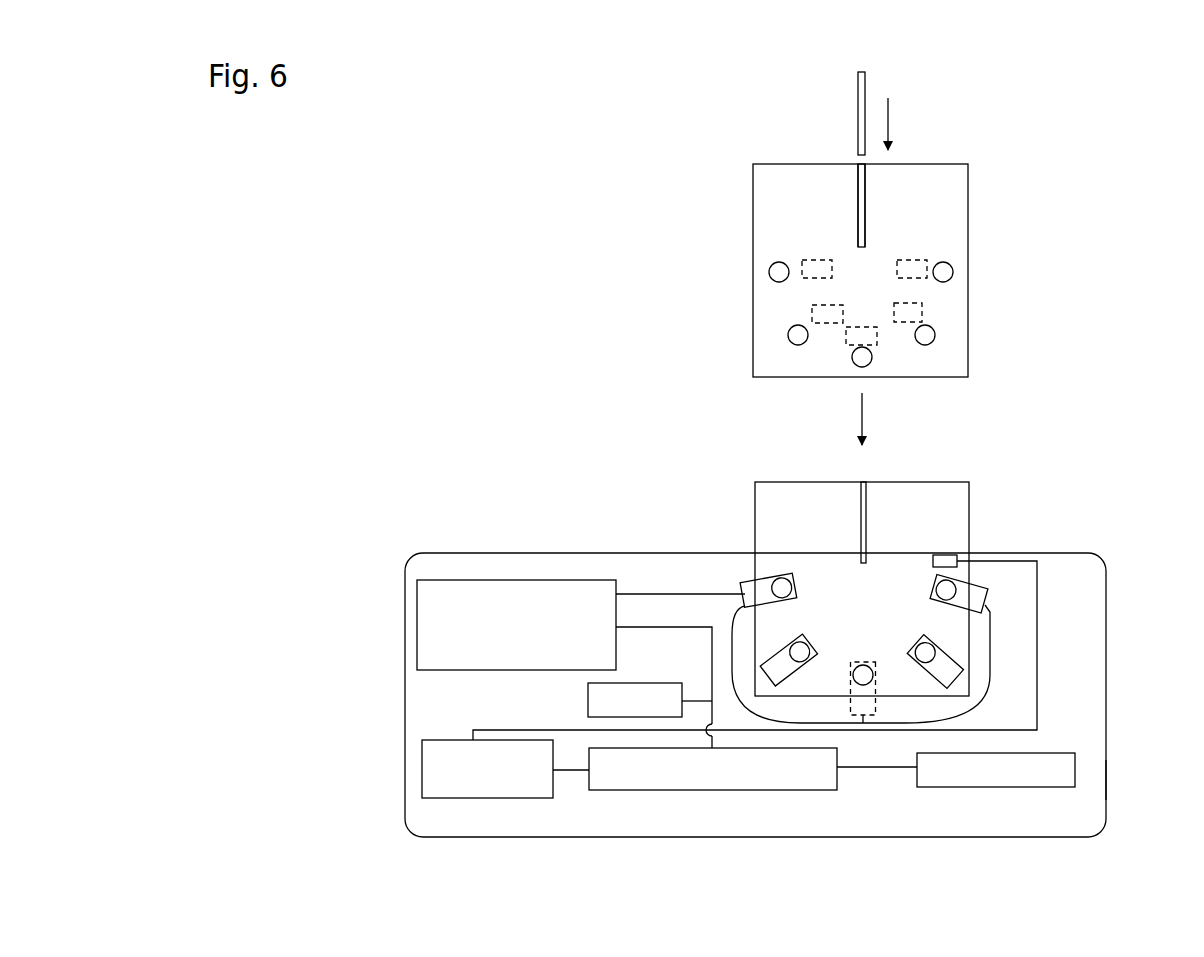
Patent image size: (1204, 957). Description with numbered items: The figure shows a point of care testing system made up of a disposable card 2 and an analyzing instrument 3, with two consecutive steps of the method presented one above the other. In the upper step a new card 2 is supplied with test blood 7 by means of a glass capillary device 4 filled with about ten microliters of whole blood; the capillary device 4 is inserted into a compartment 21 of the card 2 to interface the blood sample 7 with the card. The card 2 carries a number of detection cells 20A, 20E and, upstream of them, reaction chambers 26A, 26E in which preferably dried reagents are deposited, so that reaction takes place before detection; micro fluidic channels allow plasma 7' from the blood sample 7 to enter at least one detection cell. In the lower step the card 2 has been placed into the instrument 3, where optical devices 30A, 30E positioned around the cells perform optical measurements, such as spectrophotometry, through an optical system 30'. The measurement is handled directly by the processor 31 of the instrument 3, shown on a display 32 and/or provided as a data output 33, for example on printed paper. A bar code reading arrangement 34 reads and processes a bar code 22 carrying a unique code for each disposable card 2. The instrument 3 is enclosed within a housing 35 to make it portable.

The disposable card 2 is at (716, 221).
The blood sample 7 is at (871, 297).
The glass capillary device 4 is at (853, 137).
The compartment 21 is at (862, 196).
The detection cell 20A is at (770, 268).
The detection cell 20E is at (953, 272).
The reaction chamber 26A is at (802, 262).
The reaction chamber 26E is at (922, 265).
The analyzing instrument 3 is at (1110, 707).
The housing 35 is at (1107, 777).
The bar code 22 is at (947, 563).
The optical detector 30A is at (741, 593).
The optical detector 30E is at (983, 597).
The plasma 7' is at (1051, 555).
The optical system 30' is at (541, 664).
The display 32 is at (593, 688).
The bar code reading arrangement 34 is at (440, 788).
The processor 31 is at (633, 780).
The data output 33 is at (1047, 783).